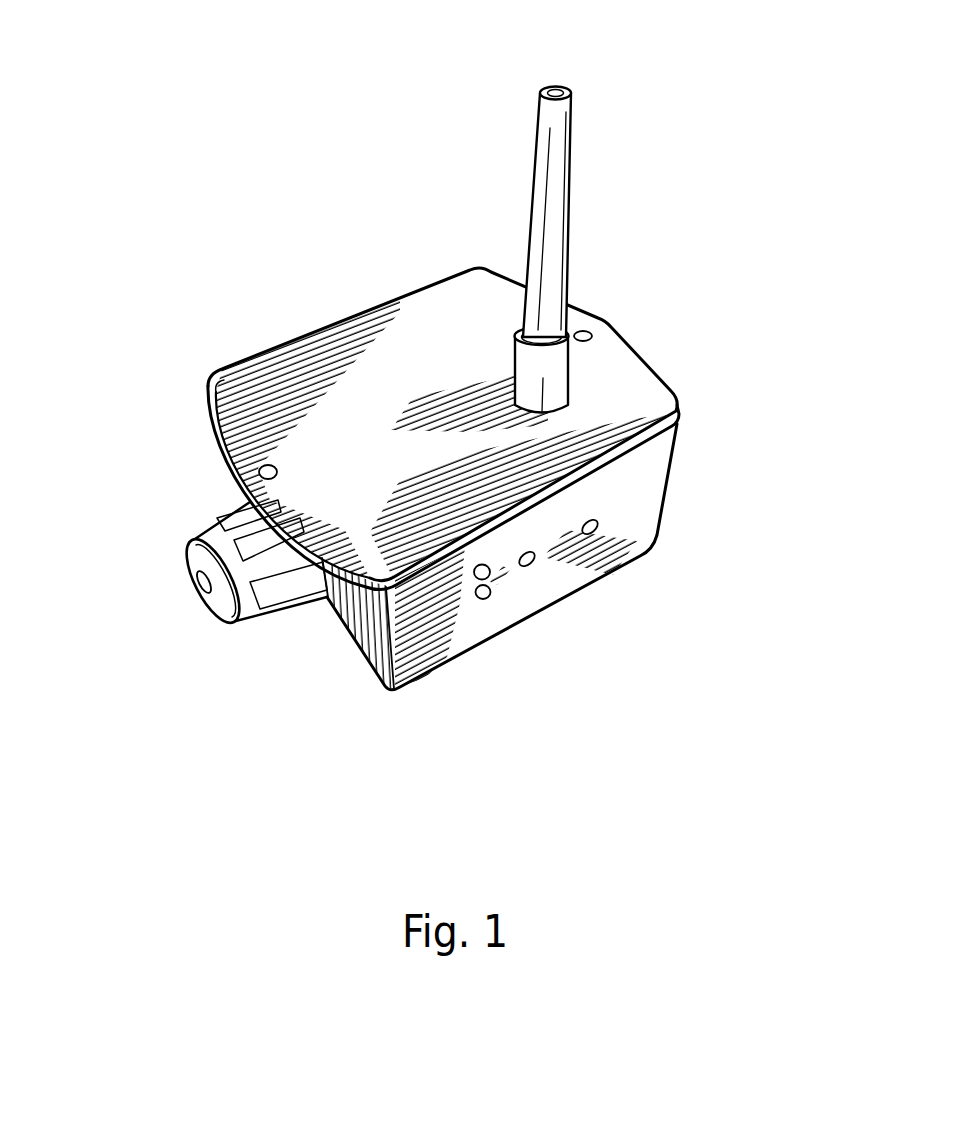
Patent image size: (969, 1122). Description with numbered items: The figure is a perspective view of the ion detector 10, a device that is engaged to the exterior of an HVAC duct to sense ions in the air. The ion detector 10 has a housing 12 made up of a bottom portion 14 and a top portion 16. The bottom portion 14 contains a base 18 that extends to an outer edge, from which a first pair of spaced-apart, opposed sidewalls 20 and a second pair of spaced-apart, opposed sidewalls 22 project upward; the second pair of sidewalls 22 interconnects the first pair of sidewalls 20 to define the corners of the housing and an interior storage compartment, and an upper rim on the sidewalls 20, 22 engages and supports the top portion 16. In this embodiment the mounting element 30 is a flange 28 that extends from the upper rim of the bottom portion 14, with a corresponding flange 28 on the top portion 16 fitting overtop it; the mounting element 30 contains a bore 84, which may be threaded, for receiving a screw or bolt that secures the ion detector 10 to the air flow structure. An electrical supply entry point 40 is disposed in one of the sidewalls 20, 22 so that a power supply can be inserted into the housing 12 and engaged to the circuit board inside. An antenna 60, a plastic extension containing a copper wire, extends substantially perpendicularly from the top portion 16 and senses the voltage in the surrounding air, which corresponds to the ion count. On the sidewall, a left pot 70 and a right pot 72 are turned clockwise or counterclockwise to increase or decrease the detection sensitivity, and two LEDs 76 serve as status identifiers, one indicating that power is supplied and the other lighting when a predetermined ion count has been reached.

The ion detector 10 is at (702, 100).
The housing 12 is at (669, 385).
The bottom portion 14 is at (676, 485).
The top portion 16 is at (253, 338).
The base 18 is at (562, 600).
The first pair of spaced-apart, opposed sidewalls 20 is at (573, 560).
The second pair of spaced-apart, opposed sidewalls 22 is at (353, 612).
The flange 28 is at (205, 380).
The mounting element 30 is at (606, 322).
The electrical supply entry point 40 is at (190, 589).
The antenna 60 is at (558, 86).
The left pot (Pot-L) 70 is at (523, 568).
The right pot (Pot-R) 72 is at (600, 530).
The LEDs 76 is at (483, 599).
The bore 84 is at (236, 477).